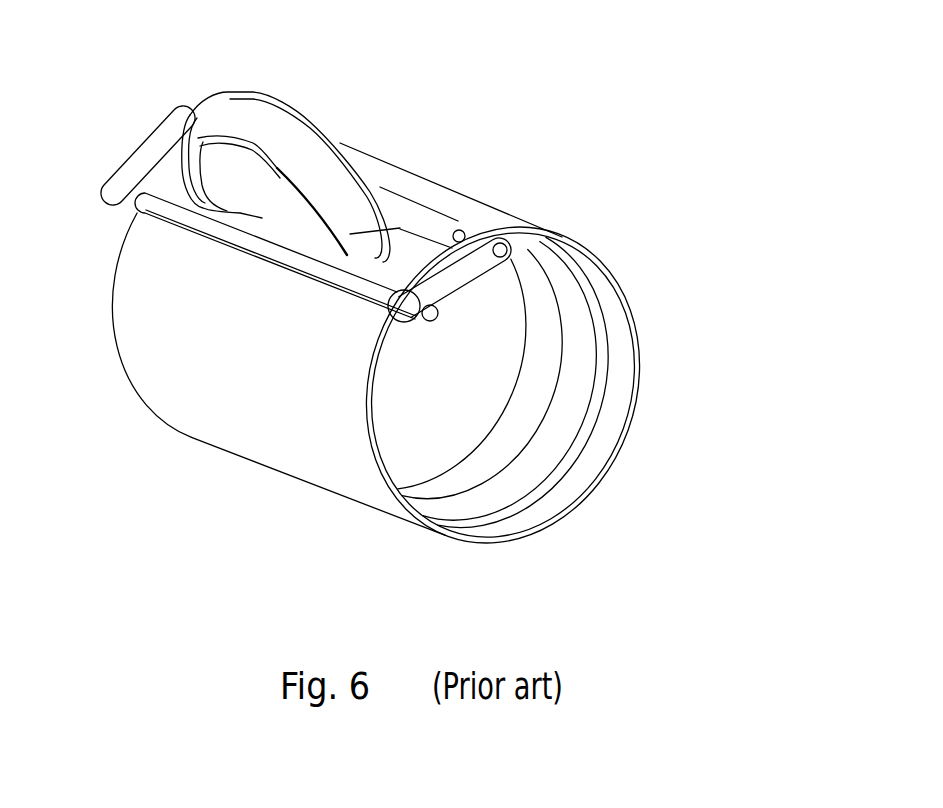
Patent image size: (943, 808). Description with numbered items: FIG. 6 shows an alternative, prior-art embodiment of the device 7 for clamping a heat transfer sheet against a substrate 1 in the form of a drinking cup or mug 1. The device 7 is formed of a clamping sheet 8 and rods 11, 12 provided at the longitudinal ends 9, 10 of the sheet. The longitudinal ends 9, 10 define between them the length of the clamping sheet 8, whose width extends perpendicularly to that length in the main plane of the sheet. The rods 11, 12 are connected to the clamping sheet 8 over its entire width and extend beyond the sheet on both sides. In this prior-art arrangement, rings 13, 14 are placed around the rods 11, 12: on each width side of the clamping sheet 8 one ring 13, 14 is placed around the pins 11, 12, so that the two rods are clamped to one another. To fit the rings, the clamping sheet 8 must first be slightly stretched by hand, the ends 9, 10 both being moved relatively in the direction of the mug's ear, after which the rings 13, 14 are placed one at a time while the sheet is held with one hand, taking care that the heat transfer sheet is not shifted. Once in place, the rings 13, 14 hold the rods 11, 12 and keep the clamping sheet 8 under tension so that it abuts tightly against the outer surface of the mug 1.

The substrate 1 is at (672, 353).
The device 7 is at (499, 164).
The clamping sheet 8 is at (376, 313).
The longitudinal end 9 is at (254, 338).
The longitudinal end 10 is at (286, 160).
The rod 11 is at (635, 226).
The rod 12 is at (377, 462).
The ring 13 is at (561, 387).
The ring 14 is at (126, 113).